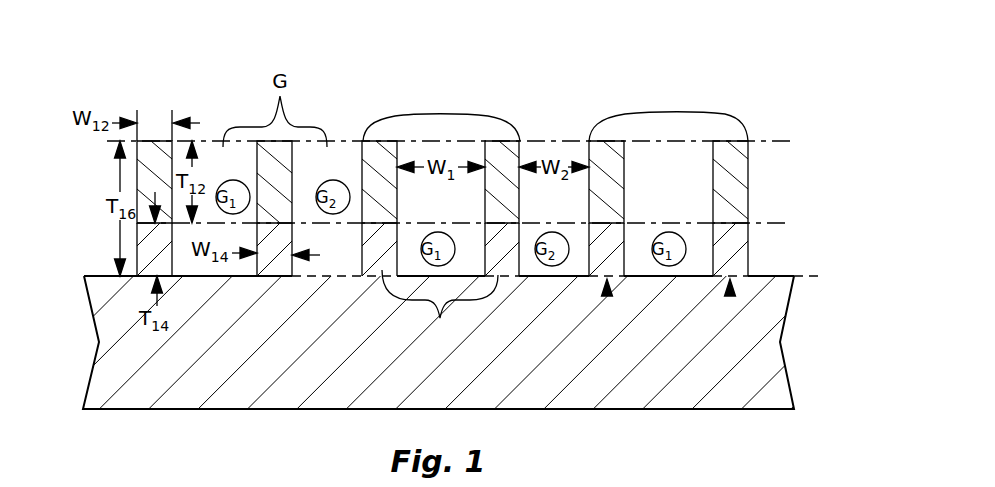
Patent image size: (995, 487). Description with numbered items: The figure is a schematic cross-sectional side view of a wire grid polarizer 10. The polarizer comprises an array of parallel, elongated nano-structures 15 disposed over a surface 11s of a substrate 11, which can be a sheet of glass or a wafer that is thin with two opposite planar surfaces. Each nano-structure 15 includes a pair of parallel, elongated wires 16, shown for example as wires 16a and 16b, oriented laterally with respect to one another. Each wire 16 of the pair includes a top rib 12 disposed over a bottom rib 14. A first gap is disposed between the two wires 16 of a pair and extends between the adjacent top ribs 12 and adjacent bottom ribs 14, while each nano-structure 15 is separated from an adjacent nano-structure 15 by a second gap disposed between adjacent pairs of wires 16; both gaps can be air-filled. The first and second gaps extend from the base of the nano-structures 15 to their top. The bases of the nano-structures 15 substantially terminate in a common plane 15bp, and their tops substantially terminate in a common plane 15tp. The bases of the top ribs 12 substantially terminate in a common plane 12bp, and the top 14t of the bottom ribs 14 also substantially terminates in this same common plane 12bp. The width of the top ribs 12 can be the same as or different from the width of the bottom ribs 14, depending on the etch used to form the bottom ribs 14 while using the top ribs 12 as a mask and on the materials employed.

The wire grid polarizer 10 is at (122, 25).
The substrate 11 is at (428, 392).
The surface of the substrate 11s is at (764, 276).
The top rib 12 is at (144, 171).
The common plane 12bp is at (771, 224).
The bottom rib 14 is at (144, 261).
The top of the bottom ribs 14t is at (613, 223).
The nano-structure 15 is at (472, 114).
The common plane 15tp is at (772, 141).
The common plane 15bp is at (822, 279).
The wire 16 is at (157, 82).
The wire 16a is at (607, 298).
The wire 16b is at (730, 298).